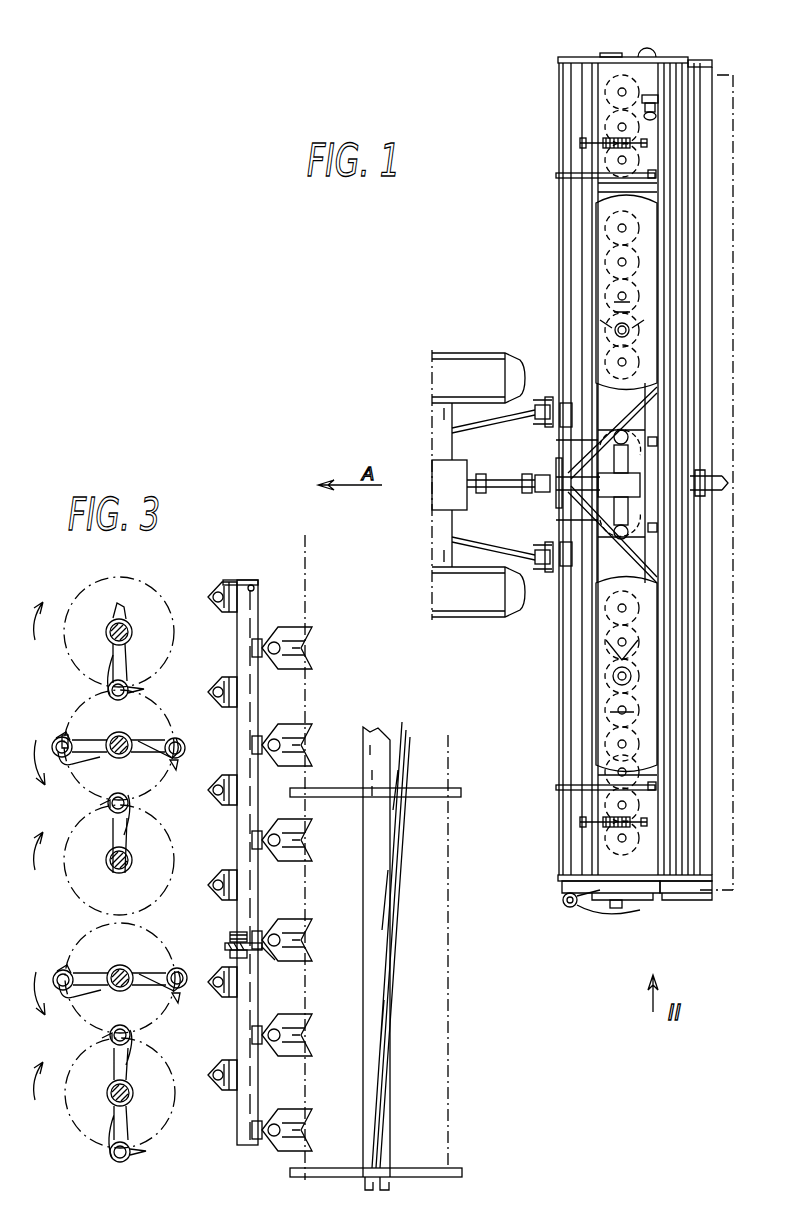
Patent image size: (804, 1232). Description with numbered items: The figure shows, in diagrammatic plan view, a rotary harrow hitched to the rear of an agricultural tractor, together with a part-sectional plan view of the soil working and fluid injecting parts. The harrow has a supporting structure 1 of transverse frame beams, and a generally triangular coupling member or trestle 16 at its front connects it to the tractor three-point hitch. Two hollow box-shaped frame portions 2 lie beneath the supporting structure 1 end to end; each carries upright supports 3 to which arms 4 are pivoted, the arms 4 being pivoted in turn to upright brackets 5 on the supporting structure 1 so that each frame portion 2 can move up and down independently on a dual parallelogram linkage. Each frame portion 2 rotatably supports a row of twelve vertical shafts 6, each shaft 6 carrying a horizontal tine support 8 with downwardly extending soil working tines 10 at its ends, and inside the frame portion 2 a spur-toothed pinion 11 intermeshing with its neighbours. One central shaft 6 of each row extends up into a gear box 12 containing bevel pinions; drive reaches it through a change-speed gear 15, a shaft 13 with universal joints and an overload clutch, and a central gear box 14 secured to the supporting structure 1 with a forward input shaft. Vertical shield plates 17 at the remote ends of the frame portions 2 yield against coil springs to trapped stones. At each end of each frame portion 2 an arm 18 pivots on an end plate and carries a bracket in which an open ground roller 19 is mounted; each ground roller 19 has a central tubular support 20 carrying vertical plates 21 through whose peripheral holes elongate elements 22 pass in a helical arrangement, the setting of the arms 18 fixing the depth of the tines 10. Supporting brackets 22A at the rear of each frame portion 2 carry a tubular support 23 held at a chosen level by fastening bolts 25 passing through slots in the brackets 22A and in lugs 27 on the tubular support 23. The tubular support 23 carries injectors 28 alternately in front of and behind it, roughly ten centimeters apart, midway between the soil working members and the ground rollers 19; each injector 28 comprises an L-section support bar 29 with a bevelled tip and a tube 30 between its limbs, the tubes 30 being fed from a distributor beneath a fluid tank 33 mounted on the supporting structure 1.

In FIG. 1, the supporting structure 1 is at (557, 110).
In FIG. 1, the frame portion 2 is at (612, 110).
In FIG. 1, the upright support 3 is at (622, 482).
In FIG. 1, the arm 4 is at (556, 175).
In FIG. 1, the upright bracket 5 is at (556, 178).
In FIG. 1, the shaft 6 is at (618, 92).
In FIG. 3, the shaft 6 is at (125, 622).
In FIG. 3, the tine support 8 is at (130, 755).
In FIG. 3, the soil working tine 10 is at (130, 690).
In FIG. 1, the toothed pinion 11 is at (613, 238).
In FIG. 1, the gear box 12 is at (612, 296).
In FIG. 1, the shaft 13 is at (596, 372).
In FIG. 1, the central gear box 14 is at (640, 462).
In FIG. 1, the change-speed gear 15 is at (612, 268).
In FIG. 1, the coupling member or trestle 16 is at (556, 458).
In FIG. 1, the shield plate 17 is at (640, 910).
In FIG. 1, the arm 18 is at (700, 64).
In FIG. 1, the ground roller 19 is at (743, 204).
In FIG. 3, the ground roller 19 is at (460, 1096).
In FIG. 1, the tubular support 20 is at (700, 290).
In FIG. 3, the tubular support 20 is at (358, 754).
In FIG. 3, the plate 21 is at (334, 798).
In FIG. 3, the elongate element 22 is at (400, 878).
In FIG. 3, the supporting bracket 22A is at (225, 946).
In FIG. 3, the tubular support 23 is at (237, 1140).
In FIG. 3, the fastening bolt 25 is at (230, 935).
In FIG. 3, the lug 27 is at (259, 963).
In FIG. 3, the injector 28 is at (298, 624).
In FIG. 3, the support bar 29 is at (296, 680).
In FIG. 3, the tube 30 is at (296, 648).
In FIG. 1, the fluid container or tank 33 is at (600, 326).